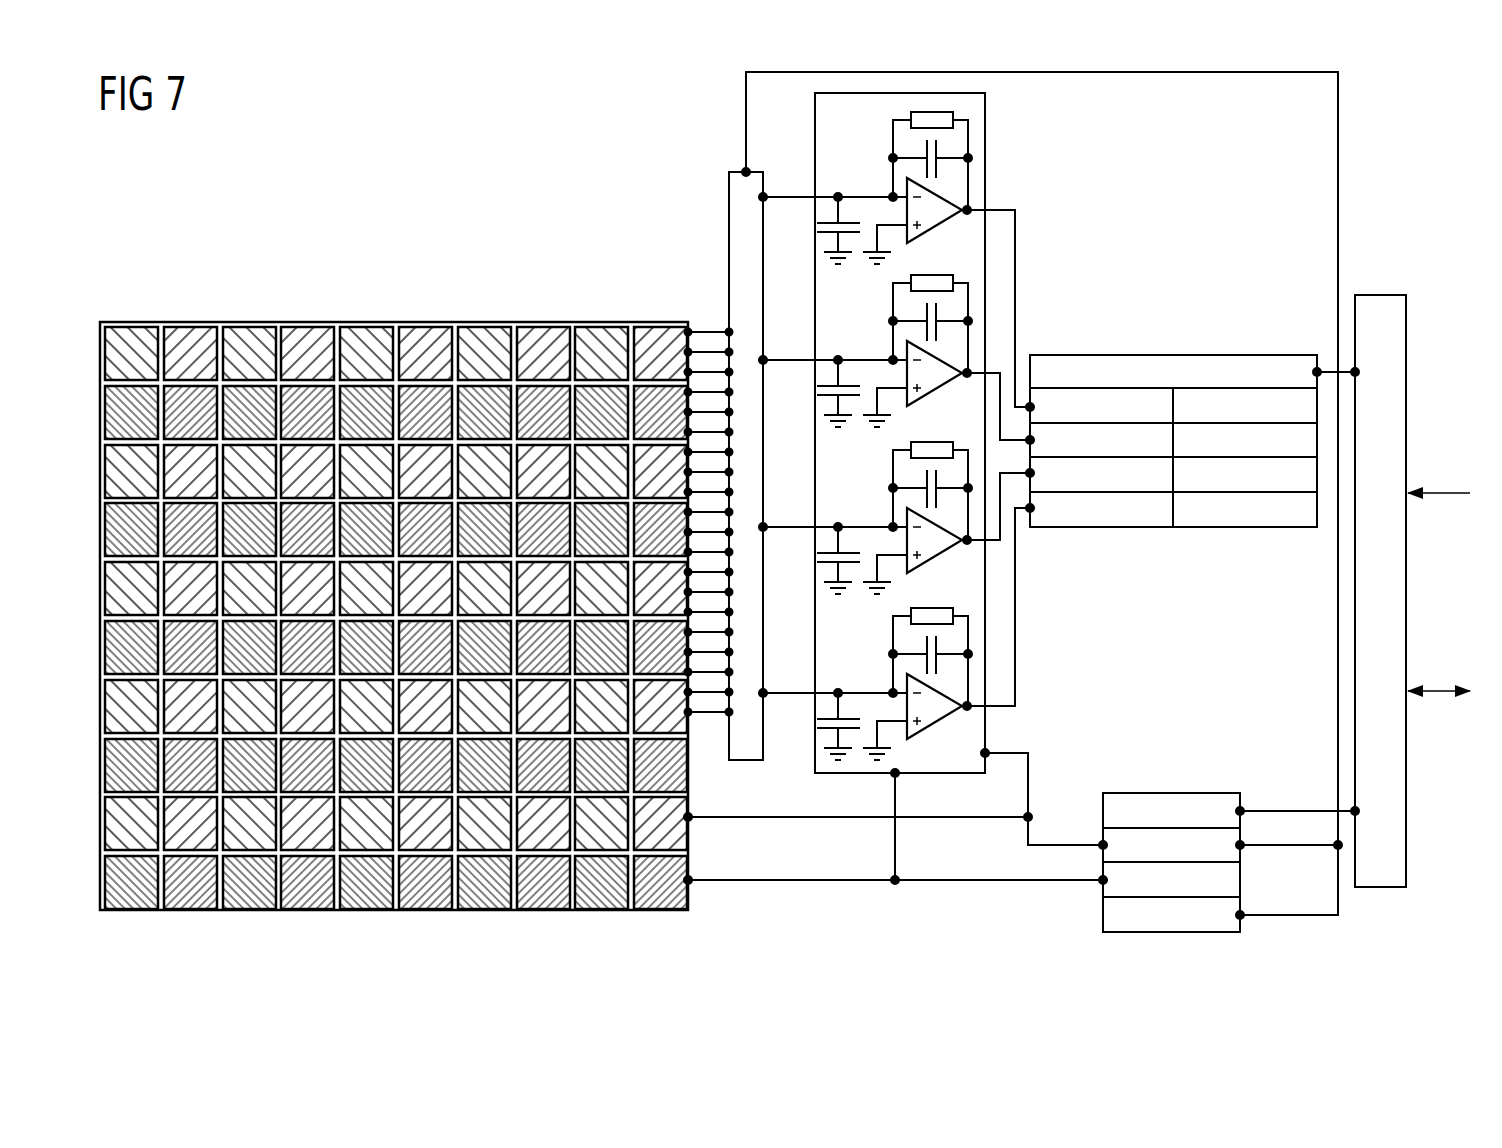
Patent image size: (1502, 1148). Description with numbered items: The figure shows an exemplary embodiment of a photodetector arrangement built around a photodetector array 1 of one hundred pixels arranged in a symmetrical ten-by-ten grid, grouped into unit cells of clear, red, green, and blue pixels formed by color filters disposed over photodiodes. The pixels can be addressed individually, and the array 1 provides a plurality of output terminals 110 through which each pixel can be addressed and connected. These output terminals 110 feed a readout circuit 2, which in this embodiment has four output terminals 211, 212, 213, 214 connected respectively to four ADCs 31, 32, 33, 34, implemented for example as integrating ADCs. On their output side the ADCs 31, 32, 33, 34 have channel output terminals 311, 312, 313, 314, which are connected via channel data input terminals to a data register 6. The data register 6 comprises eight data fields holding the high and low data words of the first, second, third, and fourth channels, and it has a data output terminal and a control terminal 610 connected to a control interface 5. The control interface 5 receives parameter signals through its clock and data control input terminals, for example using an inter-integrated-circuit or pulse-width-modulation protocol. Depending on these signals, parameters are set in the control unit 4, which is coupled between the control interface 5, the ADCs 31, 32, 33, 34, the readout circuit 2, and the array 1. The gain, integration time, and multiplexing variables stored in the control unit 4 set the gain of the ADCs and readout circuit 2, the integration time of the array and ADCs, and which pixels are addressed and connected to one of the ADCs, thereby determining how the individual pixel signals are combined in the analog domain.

The photodetector array 1 is at (394, 322).
The output terminals 110 is at (715, 332).
The readout circuit 2 is at (729, 255).
The first output terminal of readout circuit 211 is at (763, 197).
The second output terminal of readout circuit 212 is at (763, 360).
The third output terminal of readout circuit 213 is at (763, 527).
The fourth output terminal of readout circuit 214 is at (763, 693).
The first ADC 31 is at (838, 197).
The second ADC 32 is at (838, 360).
The third ADC 33 is at (838, 527).
The fourth ADC 34 is at (838, 693).
The first channel output terminal 311 is at (985, 210).
The second channel output terminal 312 is at (985, 374).
The third channel output terminal 313 is at (985, 541).
The fourth channel output terminal 314 is at (985, 707).
The data register 6 is at (1173, 316).
The control terminal 610 is at (1175, 352).
The control unit 4 is at (1172, 793).
The control interface 5 is at (1380, 295).